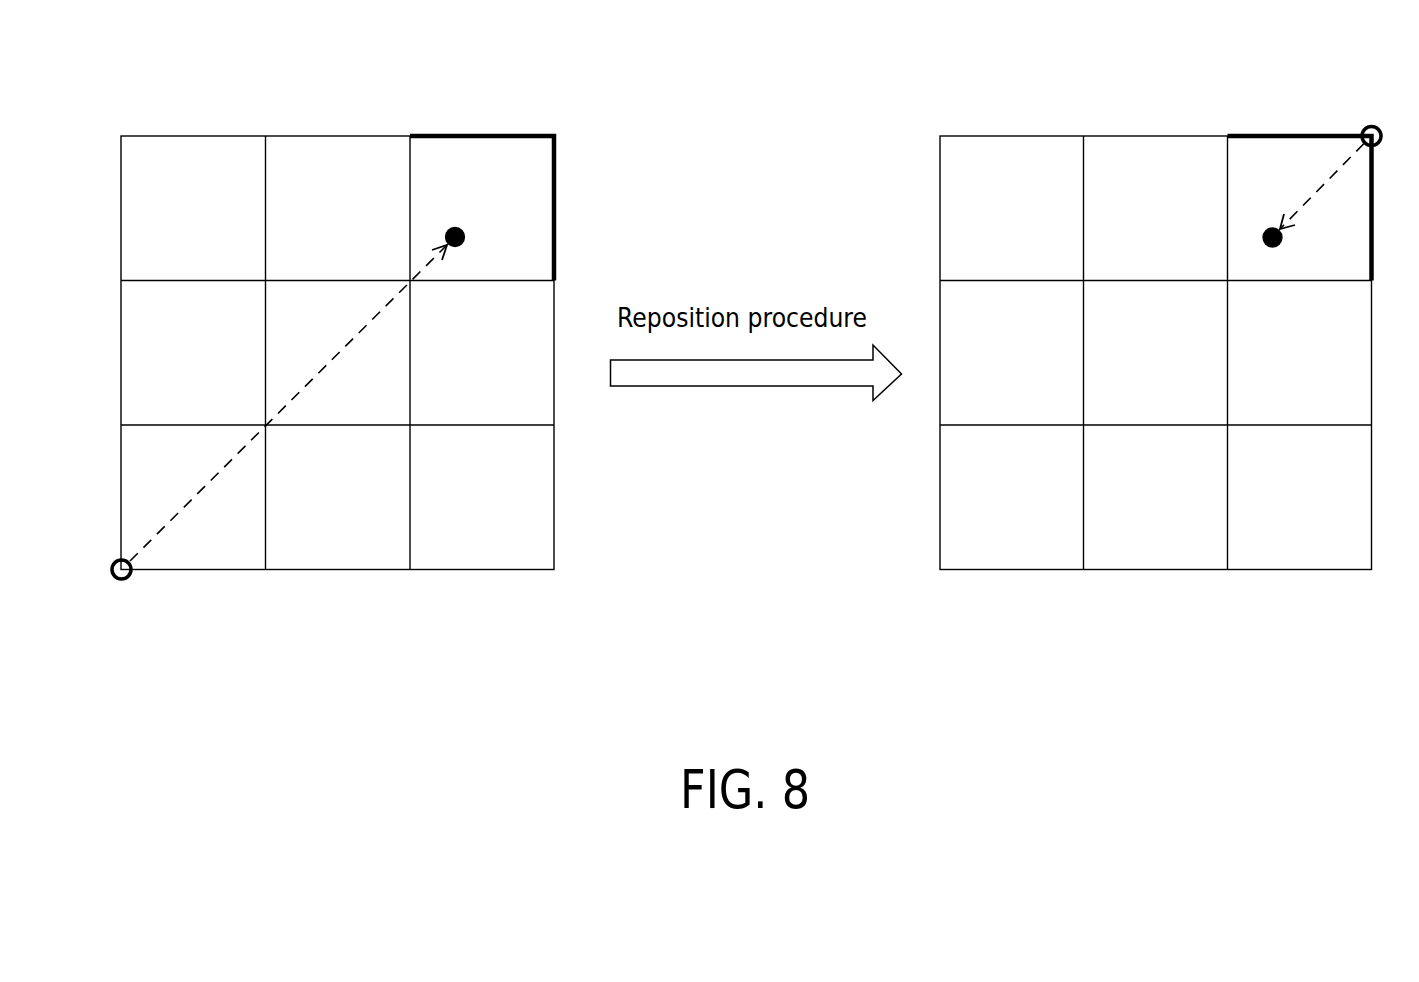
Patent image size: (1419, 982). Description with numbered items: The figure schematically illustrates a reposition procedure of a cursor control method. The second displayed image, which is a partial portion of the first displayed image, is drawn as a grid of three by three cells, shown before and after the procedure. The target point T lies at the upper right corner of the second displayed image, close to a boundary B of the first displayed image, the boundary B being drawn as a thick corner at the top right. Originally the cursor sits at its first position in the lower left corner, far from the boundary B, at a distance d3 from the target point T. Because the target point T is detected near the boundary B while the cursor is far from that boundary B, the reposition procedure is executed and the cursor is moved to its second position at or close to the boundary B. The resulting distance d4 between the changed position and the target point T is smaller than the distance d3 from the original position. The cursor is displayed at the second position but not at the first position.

The boundary B is at (455, 135).
The target point T is at (864, 239).
The distance d3 is at (288, 403).
The distance d4 is at (1322, 187).